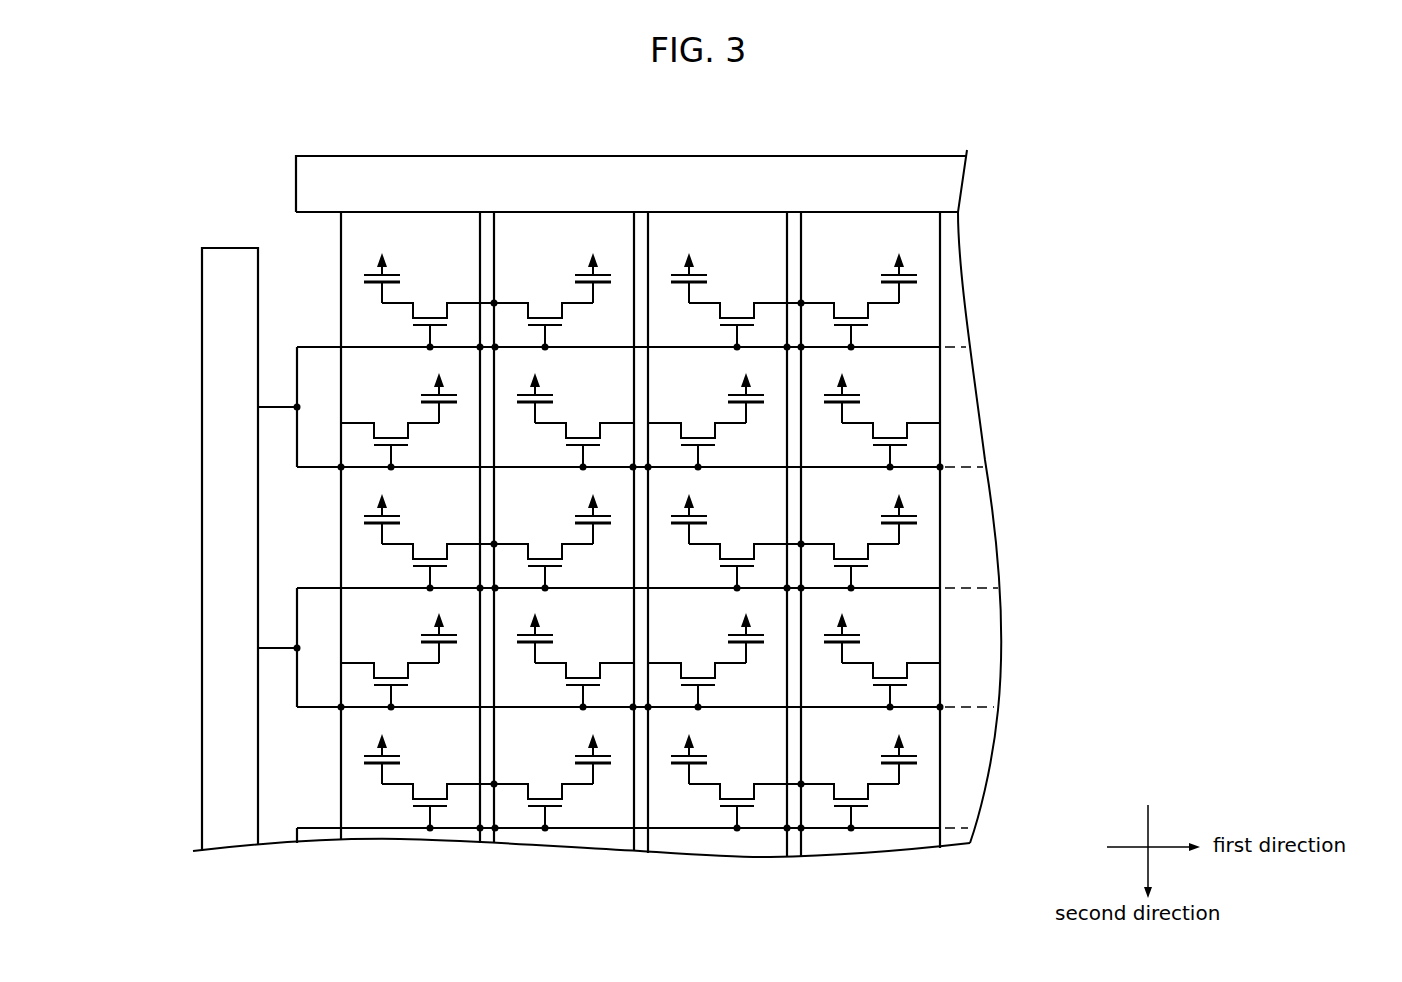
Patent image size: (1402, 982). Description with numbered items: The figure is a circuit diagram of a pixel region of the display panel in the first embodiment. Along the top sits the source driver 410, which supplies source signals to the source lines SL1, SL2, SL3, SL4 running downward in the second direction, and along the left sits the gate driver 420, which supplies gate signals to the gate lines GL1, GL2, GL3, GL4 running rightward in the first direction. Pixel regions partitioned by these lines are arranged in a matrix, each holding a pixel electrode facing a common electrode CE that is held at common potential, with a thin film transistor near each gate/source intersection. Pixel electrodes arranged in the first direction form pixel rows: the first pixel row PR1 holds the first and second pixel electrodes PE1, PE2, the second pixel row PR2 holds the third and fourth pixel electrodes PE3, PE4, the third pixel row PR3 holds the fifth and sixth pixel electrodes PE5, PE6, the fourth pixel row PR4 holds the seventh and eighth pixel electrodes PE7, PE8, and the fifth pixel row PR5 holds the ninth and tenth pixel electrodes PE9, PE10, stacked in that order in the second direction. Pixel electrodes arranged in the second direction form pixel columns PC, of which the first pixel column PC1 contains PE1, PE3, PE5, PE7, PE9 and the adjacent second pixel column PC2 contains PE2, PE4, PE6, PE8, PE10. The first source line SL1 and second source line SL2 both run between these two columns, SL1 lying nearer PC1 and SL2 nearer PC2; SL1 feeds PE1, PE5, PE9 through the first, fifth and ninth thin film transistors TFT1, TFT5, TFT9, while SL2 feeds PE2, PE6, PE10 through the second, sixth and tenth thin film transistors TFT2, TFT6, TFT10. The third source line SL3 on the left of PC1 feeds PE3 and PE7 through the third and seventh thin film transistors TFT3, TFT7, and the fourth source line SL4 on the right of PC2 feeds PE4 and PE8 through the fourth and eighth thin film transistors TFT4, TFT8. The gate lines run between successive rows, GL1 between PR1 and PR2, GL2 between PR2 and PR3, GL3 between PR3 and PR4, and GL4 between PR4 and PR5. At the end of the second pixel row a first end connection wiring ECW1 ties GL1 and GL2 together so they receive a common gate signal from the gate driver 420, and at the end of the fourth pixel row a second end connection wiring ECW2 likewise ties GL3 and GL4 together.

The source driver 410 is at (640, 153).
The gate driver 420 is at (202, 503).
The first gate line GL1 is at (317, 345).
The second gate line GL2 is at (318, 469).
The third gate line GL3 is at (318, 586).
The fourth gate line GL4 is at (317, 709).
The first end connection wiring ECW1 is at (297, 381).
The second end connection wiring ECW2 is at (297, 611).
The first source line SL1 is at (788, 847).
The second source line SL2 is at (801, 847).
The third source line SL3 is at (648, 847).
The fourth source line SL4 is at (940, 847).
The pixel column PC is at (480, 860).
The first pixel column PC1 is at (725, 580).
The second pixel column PC2 is at (871, 580).
The first pixel row PR1 is at (1008, 212).
The second pixel row PR2 is at (1008, 347).
The third pixel row PR3 is at (1008, 467).
The fourth pixel row PR4 is at (1008, 588).
The fifth pixel row PR5 is at (1008, 707).
The common electrode CE is at (701, 278).
The first pixel electrode PE1 is at (701, 283).
The second pixel electrode PE2 is at (887, 283).
The third pixel electrode PE3 is at (734, 403).
The fourth pixel electrode PE4 is at (854, 403).
The fifth pixel electrode PE5 is at (701, 524).
The sixth pixel electrode PE6 is at (887, 524).
The seventh pixel electrode PE7 is at (734, 643).
The eighth pixel electrode PE8 is at (854, 643).
The ninth pixel electrode PE9 is at (701, 764).
The tenth pixel electrode PE10 is at (887, 764).
The first thin film transistor TFT1 is at (711, 313).
The second thin film transistor TFT2 is at (900, 320).
The third thin film transistor TFT3 is at (747, 440).
The fourth thin film transistor TFT4 is at (864, 433).
The fifth thin film transistor TFT5 is at (711, 554).
The sixth thin film transistor TFT6 is at (900, 561).
The seventh thin film transistor TFT7 is at (747, 680).
The eighth thin film transistor TFT8 is at (864, 673).
The ninth thin film transistor TFT9 is at (711, 794).
The tenth thin film transistor TFT10 is at (900, 801).